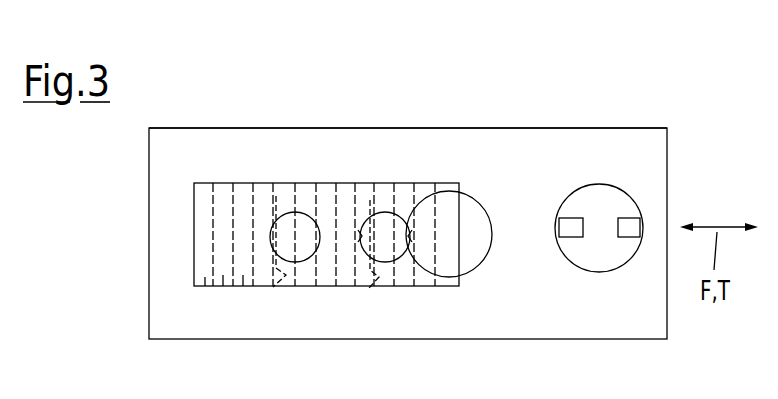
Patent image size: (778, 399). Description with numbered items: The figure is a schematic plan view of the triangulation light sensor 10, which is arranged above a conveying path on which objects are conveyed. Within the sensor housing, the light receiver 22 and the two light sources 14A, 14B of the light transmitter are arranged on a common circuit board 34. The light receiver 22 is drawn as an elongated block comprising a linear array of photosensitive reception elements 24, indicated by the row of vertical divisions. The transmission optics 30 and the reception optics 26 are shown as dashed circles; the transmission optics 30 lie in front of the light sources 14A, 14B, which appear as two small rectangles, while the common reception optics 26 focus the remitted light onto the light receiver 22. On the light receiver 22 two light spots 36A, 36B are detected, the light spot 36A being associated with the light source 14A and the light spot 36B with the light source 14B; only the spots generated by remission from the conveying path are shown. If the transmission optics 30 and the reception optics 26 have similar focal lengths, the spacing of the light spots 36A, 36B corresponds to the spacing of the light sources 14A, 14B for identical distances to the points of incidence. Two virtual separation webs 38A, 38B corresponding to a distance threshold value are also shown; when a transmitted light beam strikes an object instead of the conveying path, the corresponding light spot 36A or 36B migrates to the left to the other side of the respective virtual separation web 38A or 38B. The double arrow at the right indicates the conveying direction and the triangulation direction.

The triangulation light sensor 10 is at (583, 93).
The common circuit board 34 is at (196, 127).
The light receiver 22 is at (307, 287).
The photosensitive reception elements 24 is at (243, 275).
The light spot 36A is at (293, 212).
The light spot 36B is at (392, 212).
The virtual separation web 38A is at (276, 284).
The virtual separation web 38B is at (372, 280).
The reception optics 26 is at (465, 275).
The transmission optics 30 is at (587, 270).
The light source 14A is at (570, 225).
The light source 14B is at (623, 220).